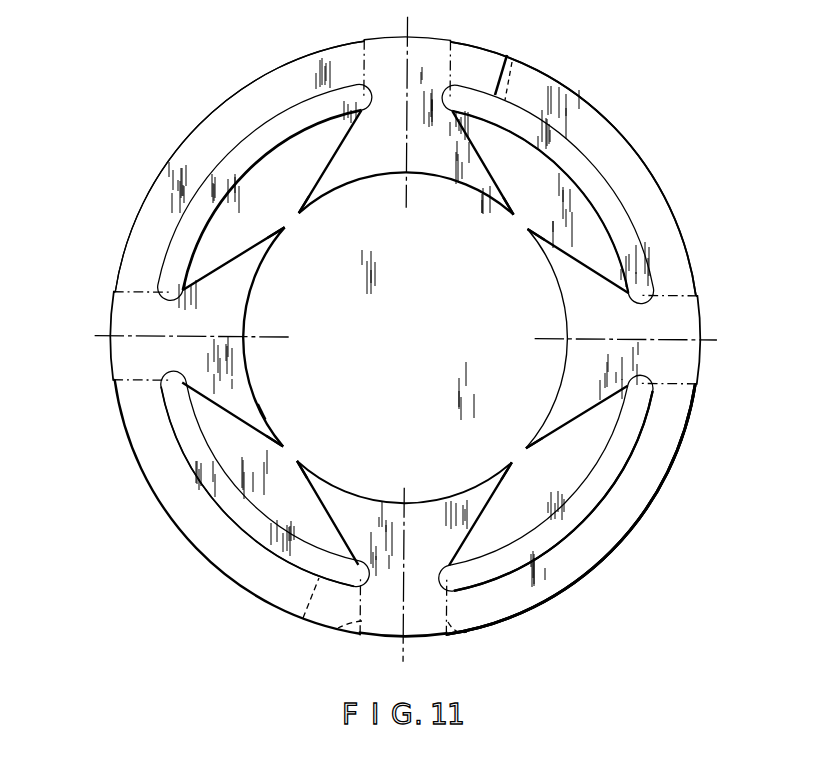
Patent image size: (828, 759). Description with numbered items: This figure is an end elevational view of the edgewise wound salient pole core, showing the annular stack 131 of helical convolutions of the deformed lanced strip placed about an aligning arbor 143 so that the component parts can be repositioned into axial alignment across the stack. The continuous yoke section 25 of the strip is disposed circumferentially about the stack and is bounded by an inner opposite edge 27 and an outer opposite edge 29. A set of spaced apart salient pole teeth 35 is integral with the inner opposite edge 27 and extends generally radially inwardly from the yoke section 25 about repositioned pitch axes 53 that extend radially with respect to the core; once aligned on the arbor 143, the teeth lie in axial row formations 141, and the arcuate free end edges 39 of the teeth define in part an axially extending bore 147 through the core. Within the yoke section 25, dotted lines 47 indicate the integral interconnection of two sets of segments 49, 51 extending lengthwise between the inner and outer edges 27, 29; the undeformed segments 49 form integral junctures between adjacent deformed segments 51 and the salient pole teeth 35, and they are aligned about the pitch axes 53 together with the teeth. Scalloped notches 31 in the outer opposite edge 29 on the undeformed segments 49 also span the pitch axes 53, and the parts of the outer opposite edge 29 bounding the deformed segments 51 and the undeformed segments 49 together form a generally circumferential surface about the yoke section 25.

The annular stack 131 is at (653, 148).
The yoke section 25 is at (647, 503).
The inner opposite edge 27 is at (620, 462).
The outer opposite edge 29 is at (680, 452).
The notches 31 is at (429, 37).
The salient pole teeth 35 is at (455, 173).
The arcuate edge 39 is at (333, 190).
The dotted lines 47 is at (338, 630).
The undeformed segments 49 is at (391, 48).
The deformed segments 51 is at (240, 108).
The pitch axes 53 is at (407, 200).
The axial row formations of salient pole teeth 141 is at (253, 380).
The aligning arbor 143 is at (247, 162).
The bore 147 is at (263, 418).